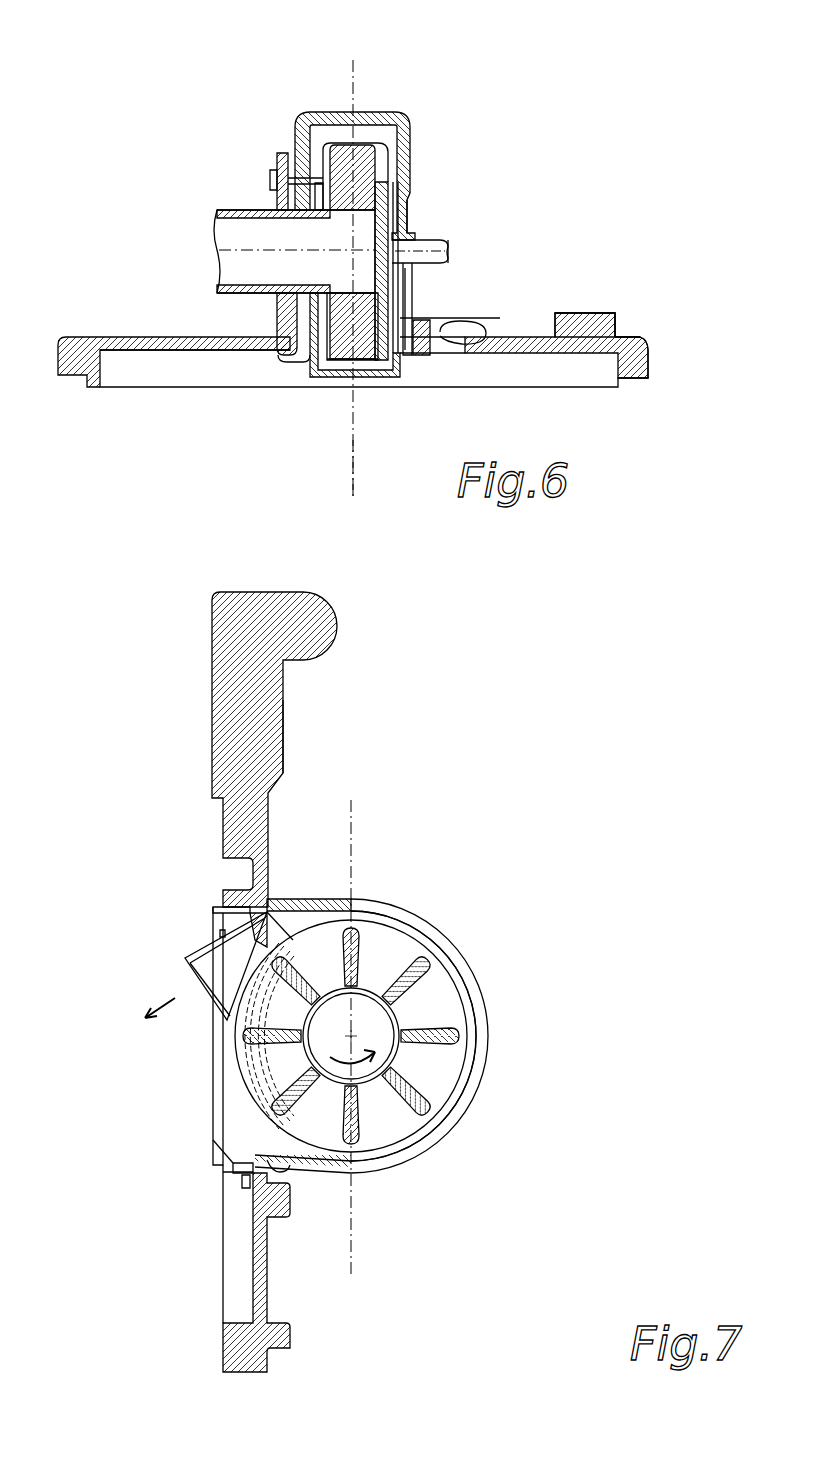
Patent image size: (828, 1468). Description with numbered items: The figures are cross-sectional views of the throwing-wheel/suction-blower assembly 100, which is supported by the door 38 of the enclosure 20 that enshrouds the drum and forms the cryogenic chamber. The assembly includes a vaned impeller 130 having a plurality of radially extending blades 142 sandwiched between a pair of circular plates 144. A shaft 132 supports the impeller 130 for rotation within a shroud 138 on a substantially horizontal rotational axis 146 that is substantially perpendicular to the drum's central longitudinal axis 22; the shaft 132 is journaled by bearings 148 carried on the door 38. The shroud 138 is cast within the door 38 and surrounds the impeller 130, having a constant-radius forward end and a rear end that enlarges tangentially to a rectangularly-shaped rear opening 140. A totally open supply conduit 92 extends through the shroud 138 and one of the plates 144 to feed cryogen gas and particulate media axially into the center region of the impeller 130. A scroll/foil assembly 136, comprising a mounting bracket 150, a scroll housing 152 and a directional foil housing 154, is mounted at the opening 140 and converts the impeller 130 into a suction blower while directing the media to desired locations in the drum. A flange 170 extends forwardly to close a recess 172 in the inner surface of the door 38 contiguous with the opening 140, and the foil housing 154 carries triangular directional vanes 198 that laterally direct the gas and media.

In FIG. 6, the enclosure 20 is at (105, 333).
In FIG. 7, the enclosure 20 is at (285, 692).
In FIG. 6, the central longitudinal axis 22 is at (352, 445).
In FIG. 6, the door 38 is at (163, 337).
In FIG. 7, the door 38 is at (285, 737).
In FIG. 6, the supply conduit 92 is at (232, 210).
In FIG. 6, the throwing-wheel/suction-blower assembly 100 is at (452, 142).
In FIG. 7, the throwing-wheel/suction-blower assembly 100 is at (468, 912).
In FIG. 6, the impeller 130 is at (368, 140).
In FIG. 7, the impeller 130 is at (393, 926).
In FIG. 6, the shaft 132 is at (430, 238).
In FIG. 6, the scroll/foil assembly 136 is at (305, 383).
In FIG. 7, the scroll/foil assembly 136 is at (213, 1142).
In FIG. 6, the shroud 138 is at (300, 110).
In FIG. 7, the shroud 138 is at (488, 1003).
In FIG. 6, the rear opening 140 is at (405, 320).
In FIG. 7, the rear opening 140 is at (267, 1162).
In FIG. 6, the blades 142 is at (333, 143).
In FIG. 7, the blades 142 is at (440, 1088).
In FIG. 6, the circular plates 144 is at (325, 173).
In FIG. 7, the circular plates 144 is at (395, 1143).
In FIG. 6, the rotational axis 146 is at (457, 253).
In FIG. 6, the bearings 148 is at (418, 230).
In FIG. 6, the mounting bracket 150 is at (293, 368).
In FIG. 7, the mounting bracket 150 is at (213, 928).
In FIG. 6, the scroll housing 152 is at (338, 377).
In FIG. 7, the scroll housing 152 is at (233, 1088).
In FIG. 7, the directional foil housing 154 is at (200, 947).
In FIG. 6, the flange 170 is at (460, 343).
In FIG. 6, the recess 172 is at (467, 327).
In FIG. 7, the directional vanes 198 is at (265, 936).